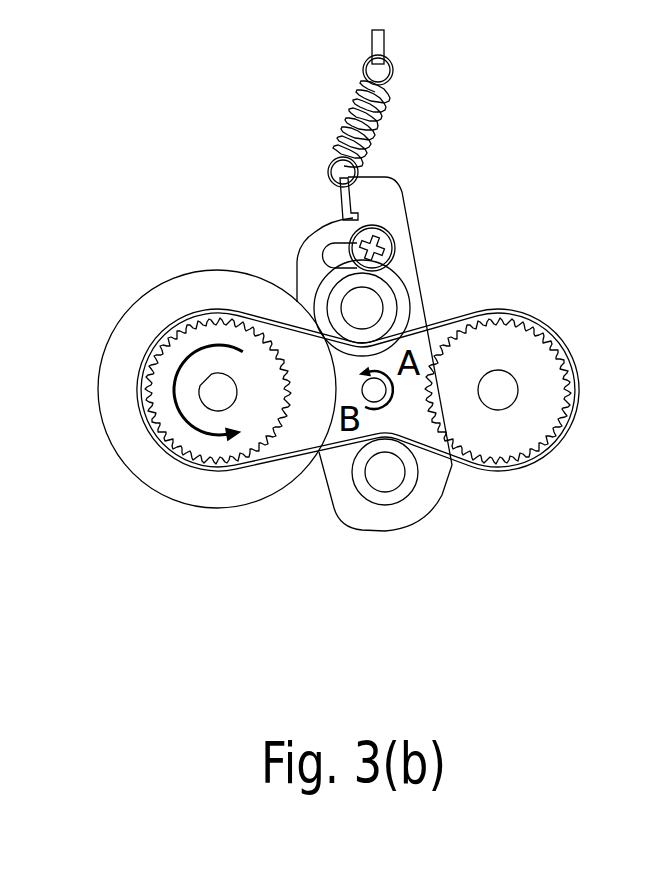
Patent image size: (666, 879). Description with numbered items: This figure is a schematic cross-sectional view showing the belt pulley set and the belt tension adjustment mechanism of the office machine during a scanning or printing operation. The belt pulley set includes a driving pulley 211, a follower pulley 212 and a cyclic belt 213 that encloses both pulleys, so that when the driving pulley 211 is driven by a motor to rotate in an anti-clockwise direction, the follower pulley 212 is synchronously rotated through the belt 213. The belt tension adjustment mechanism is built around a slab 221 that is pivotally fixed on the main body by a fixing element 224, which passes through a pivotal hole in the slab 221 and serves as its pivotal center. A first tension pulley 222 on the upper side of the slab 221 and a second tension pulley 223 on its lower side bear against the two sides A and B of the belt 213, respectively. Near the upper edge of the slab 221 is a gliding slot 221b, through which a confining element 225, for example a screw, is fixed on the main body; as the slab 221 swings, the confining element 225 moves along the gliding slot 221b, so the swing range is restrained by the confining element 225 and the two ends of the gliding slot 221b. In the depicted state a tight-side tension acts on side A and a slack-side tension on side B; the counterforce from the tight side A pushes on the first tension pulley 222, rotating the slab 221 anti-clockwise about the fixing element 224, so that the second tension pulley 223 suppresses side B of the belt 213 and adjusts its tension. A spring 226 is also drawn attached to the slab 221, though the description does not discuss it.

The driving pulley 211 is at (132, 322).
The follower pulley 212 is at (523, 348).
The belt 213 is at (502, 312).
The slab 221 is at (343, 487).
The gliding slot 221b is at (340, 250).
The first tension pulley 222 is at (398, 292).
The second tension pulley 223 is at (390, 490).
The fixing element 224 is at (372, 393).
The confining element 225 is at (387, 230).
The tension spring 226 is at (345, 122).